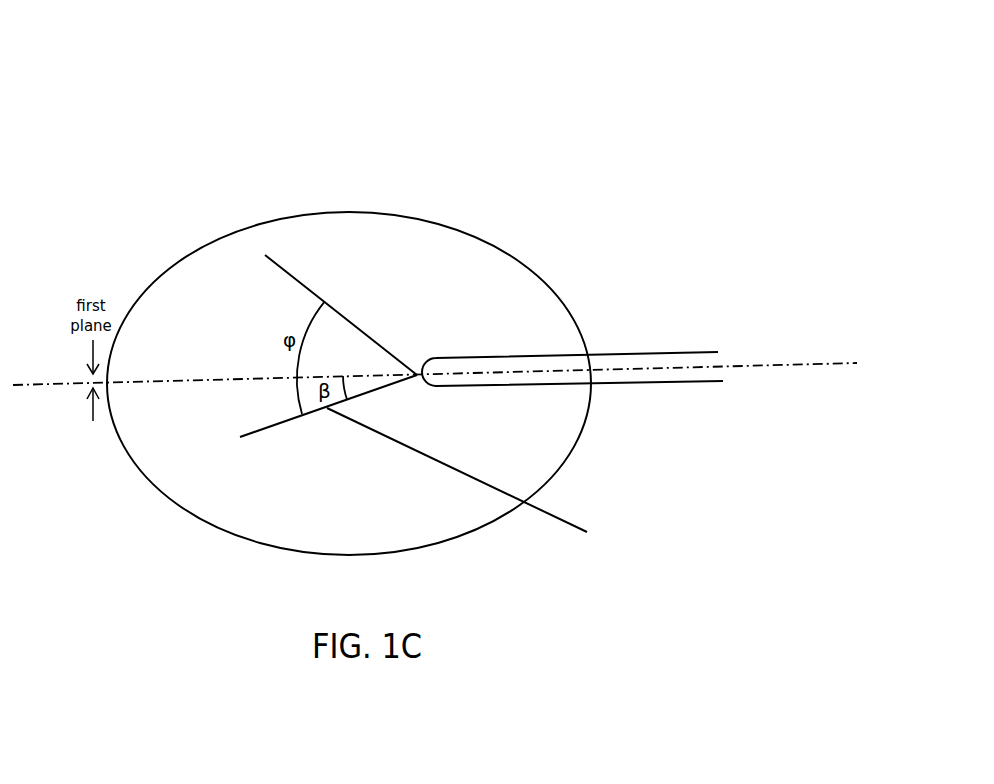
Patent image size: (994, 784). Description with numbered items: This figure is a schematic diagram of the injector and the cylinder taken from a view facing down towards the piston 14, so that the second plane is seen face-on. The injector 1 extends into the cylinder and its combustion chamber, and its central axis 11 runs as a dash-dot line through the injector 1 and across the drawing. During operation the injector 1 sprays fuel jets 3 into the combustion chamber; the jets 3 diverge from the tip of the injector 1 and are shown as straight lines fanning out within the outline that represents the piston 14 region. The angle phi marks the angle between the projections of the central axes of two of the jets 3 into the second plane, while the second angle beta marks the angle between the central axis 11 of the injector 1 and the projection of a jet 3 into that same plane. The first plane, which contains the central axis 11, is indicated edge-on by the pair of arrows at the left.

The piston 14 is at (475, 232).
The fuel jets 3 is at (312, 289).
The injector 1 is at (598, 353).
The central axis of injector 11 is at (755, 365).